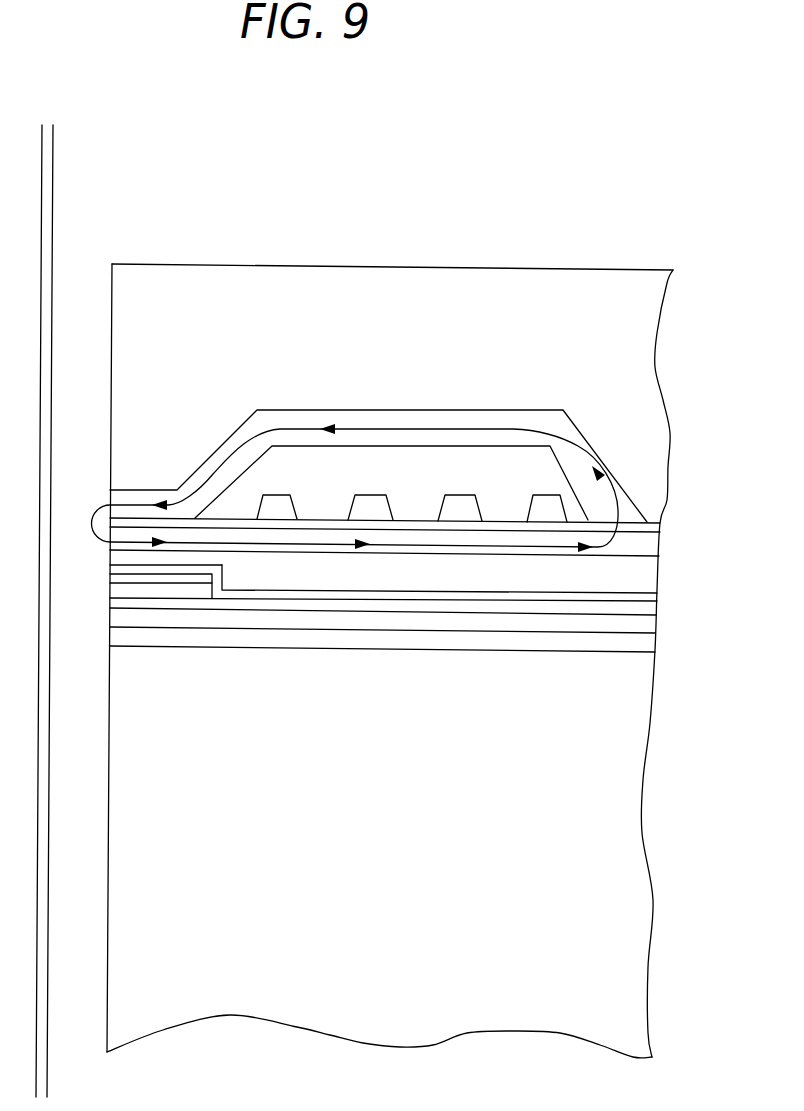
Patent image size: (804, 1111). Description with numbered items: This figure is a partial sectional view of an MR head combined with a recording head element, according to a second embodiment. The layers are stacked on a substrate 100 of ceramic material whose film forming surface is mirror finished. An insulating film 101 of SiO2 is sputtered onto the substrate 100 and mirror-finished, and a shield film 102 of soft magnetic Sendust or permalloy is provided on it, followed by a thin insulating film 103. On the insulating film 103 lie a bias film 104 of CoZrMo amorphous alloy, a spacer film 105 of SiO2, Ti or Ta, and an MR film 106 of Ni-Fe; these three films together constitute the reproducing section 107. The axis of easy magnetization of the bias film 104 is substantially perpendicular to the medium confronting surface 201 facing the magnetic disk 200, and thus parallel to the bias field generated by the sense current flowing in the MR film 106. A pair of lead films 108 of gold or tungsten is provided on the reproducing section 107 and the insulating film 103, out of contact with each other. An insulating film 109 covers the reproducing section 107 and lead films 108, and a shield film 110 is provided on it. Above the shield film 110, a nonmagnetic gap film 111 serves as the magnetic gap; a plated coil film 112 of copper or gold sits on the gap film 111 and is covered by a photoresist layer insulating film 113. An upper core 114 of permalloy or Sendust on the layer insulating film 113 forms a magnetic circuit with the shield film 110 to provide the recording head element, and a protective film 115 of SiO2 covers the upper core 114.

The substrate 100 is at (637, 684).
The insulating film 101 is at (648, 641).
The shield film 102 is at (648, 624).
The insulating film 103 is at (648, 609).
The bias film 104 is at (110, 593).
The spacer film 105 is at (110, 586).
The MR film 106 is at (110, 569).
The reproducing section 107 is at (89, 622).
The lead films 108 is at (652, 598).
The insulating film 109 is at (643, 577).
The shield film 110 is at (645, 548).
The gap film 111 is at (657, 528).
The coil film 112 is at (550, 507).
The layer insulating film 113 is at (493, 460).
The upper core 114 is at (423, 417).
The protective film 115 is at (325, 283).
The magnetic disk 200 is at (47, 228).
The medium confronting surface 201 is at (118, 997).